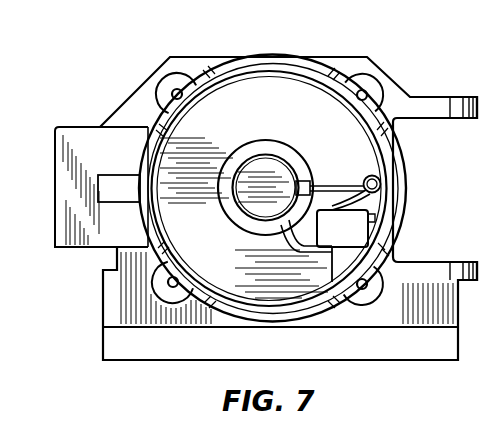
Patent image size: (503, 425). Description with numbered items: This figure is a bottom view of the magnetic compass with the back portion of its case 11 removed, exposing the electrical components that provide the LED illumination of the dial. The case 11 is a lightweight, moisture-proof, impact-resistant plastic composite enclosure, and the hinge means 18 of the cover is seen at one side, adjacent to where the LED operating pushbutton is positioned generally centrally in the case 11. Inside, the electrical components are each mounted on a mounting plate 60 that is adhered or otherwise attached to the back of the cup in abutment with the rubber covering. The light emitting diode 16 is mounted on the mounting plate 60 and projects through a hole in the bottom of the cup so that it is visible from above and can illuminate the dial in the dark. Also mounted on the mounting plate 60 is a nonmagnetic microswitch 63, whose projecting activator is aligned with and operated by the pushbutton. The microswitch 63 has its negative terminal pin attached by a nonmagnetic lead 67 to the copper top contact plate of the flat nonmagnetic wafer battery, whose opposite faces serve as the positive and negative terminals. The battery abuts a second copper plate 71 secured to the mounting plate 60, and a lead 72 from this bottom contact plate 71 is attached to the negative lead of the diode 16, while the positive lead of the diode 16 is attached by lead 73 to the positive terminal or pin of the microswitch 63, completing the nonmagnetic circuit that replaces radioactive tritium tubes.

The case 11 is at (237, 53).
The hinge means 18 is at (463, 97).
The mounting plate 60 is at (308, 113).
The second copper plate 71 is at (257, 158).
The lead 72 is at (322, 181).
The light emitting diode (LED) light source 16 is at (369, 176).
The lead 73 is at (362, 198).
The nonmagnetic microswitch 63 is at (356, 238).
The nonmagnetic lead 67 is at (290, 253).